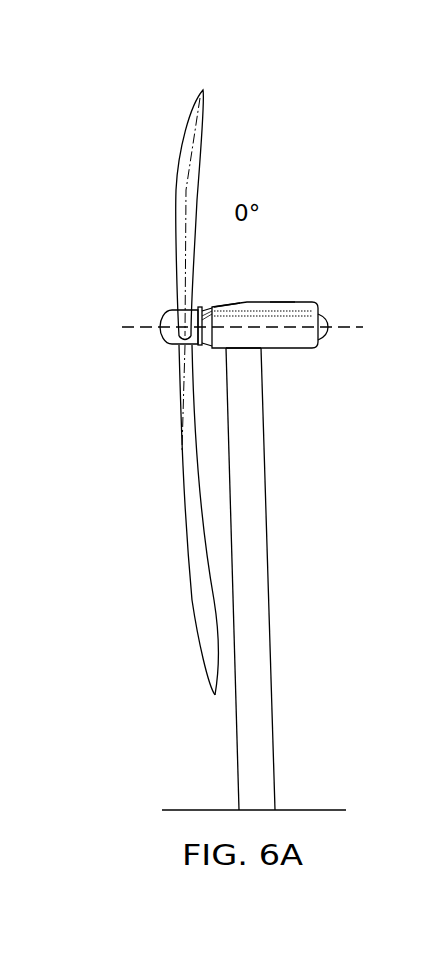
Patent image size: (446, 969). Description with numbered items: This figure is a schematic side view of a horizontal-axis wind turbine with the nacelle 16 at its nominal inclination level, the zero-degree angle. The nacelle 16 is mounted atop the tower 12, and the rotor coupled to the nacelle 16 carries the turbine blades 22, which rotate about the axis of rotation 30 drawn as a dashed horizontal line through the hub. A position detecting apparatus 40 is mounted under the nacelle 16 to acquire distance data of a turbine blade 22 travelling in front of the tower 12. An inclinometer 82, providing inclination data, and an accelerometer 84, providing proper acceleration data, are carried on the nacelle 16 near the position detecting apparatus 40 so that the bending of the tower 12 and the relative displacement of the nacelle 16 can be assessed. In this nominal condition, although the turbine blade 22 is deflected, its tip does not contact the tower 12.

The tower 12 is at (265, 489).
The nacelle 16 is at (308, 303).
The turbine blade 22 is at (191, 600).
The axis of rotation 30 is at (130, 329).
The position detecting apparatus 40 is at (236, 358).
The inclinometer 82 is at (227, 303).
The accelerometer 84 is at (282, 303).